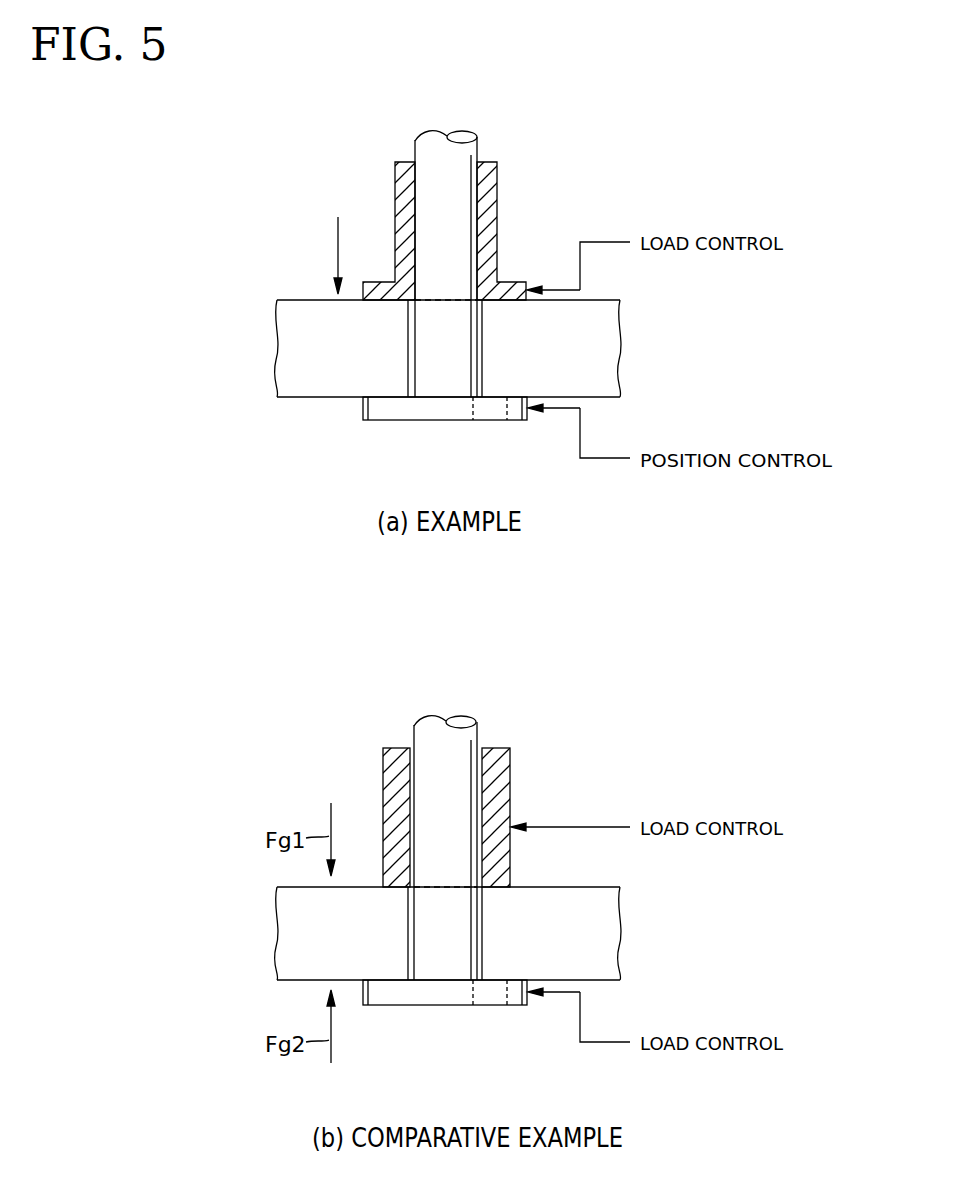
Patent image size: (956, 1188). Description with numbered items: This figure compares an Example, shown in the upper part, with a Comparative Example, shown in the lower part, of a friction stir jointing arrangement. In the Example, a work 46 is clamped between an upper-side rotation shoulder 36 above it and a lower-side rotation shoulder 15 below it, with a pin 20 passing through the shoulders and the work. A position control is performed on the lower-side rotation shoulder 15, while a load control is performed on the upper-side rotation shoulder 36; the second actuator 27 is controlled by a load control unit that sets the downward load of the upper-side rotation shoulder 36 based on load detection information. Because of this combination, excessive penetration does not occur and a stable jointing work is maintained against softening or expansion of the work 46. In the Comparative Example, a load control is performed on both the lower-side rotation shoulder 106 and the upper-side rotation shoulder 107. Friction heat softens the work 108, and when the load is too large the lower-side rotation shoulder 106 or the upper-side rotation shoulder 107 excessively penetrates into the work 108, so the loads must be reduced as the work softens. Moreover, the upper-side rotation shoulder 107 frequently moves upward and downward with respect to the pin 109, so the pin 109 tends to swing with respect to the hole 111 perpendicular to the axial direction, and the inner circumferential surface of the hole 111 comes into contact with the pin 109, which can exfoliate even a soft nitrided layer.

The work 46 is at (300, 304).
The upper-side rotation shoulder 36 is at (383, 283).
The second actuator 27 is at (475, 237).
The shaft 20 is at (443, 348).
The lower-side rotation shoulder 15 is at (378, 408).
The upper-side rotation shoulder 107 is at (383, 792).
The hole 111 is at (477, 812).
The work 108 is at (297, 930).
The pin 109 is at (445, 933).
The lower-side rotation shoulder 106 is at (445, 995).